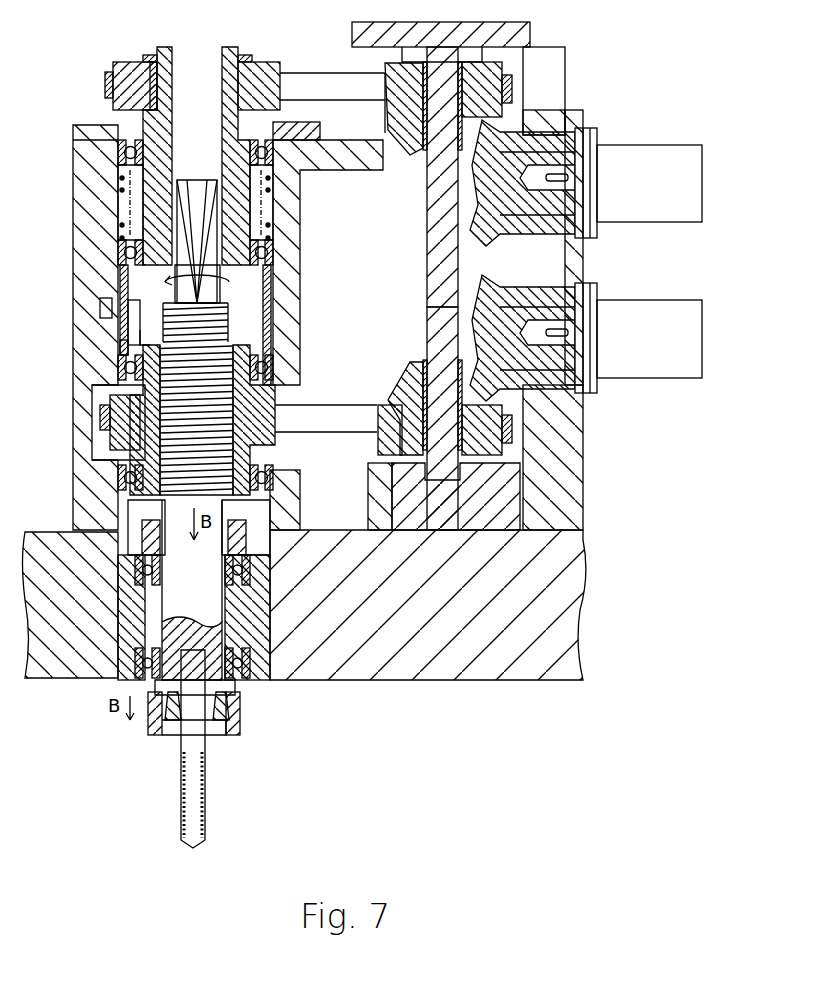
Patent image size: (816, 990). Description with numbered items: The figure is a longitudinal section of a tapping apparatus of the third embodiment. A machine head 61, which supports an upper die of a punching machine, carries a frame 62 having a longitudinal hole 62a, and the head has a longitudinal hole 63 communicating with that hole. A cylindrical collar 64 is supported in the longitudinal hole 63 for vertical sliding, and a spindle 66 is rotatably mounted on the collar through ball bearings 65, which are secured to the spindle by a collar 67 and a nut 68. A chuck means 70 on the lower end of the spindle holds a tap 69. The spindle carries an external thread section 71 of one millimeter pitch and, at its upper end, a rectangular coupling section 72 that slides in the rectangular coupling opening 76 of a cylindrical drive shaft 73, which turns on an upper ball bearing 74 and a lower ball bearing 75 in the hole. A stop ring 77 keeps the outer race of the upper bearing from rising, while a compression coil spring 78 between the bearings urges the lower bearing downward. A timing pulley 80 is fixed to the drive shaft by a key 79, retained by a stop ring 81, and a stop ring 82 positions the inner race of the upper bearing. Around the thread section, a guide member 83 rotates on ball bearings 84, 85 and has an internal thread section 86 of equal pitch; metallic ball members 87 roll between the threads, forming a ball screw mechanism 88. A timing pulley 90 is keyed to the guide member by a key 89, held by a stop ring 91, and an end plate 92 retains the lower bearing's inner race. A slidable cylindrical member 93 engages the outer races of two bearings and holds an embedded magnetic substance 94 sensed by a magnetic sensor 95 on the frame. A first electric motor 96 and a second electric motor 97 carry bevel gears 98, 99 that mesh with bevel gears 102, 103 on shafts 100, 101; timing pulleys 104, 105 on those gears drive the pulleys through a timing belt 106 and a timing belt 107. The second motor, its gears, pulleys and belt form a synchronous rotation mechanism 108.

The machine head 61 is at (500, 681).
The frame 62 is at (73, 245).
The longitudinal hole 62a is at (286, 532).
The longitudinal hole 63 is at (245, 688).
The cylindrical collar 64 is at (268, 645).
The ball bearings 65 is at (148, 600).
The spindle 66 is at (160, 500).
The collar 67 is at (262, 590).
The nut 68 is at (258, 514).
The tap 69 is at (205, 800).
The chuck means 70 is at (235, 735).
The external thread section 71 is at (280, 298).
The coupling section 72 is at (218, 292).
The cylindrical drive shaft 73 is at (220, 46).
The upper ball bearing 74 is at (262, 172).
The lower ball bearing 75 is at (290, 266).
The coupling opening 76 is at (206, 180).
The stop ring 77 is at (268, 134).
The compression coil spring 78 is at (120, 225).
The key 79 is at (130, 68).
The timing pulley 80 is at (270, 62).
The stop ring 81 is at (150, 60).
The stop ring 82 is at (270, 212).
The guide member 83 is at (135, 425).
The ball bearing 84 is at (285, 356).
The ball bearing 85 is at (275, 468).
The internal thread section 86 is at (135, 446).
The ball members 87 is at (150, 310).
The ball screw mechanism 88 is at (235, 330).
The key 89 is at (120, 370).
The timing pulley 90 is at (118, 392).
The stop ring 91 is at (150, 335).
The end plate 92 is at (290, 480).
The cylindrical member 93 is at (120, 275).
The magnetic substance 94 is at (118, 340).
The magnetic sensor 95 is at (100, 308).
The first electric motor 96 is at (668, 145).
The second electric motor 97 is at (668, 300).
The bevel gear 98 is at (478, 228).
The bevel gear 99 is at (482, 285).
The shaft 100 is at (440, 150).
The shaft 101 is at (442, 362).
The bevel gear 102 is at (408, 156).
The bevel gear 103 is at (405, 368).
The timing pulley 104 is at (385, 60).
The timing pulley 105 is at (385, 405).
The timing belt 106 is at (305, 78).
The timing belt 107 is at (328, 404).
The synchronous rotation mechanism 108 is at (423, 309).